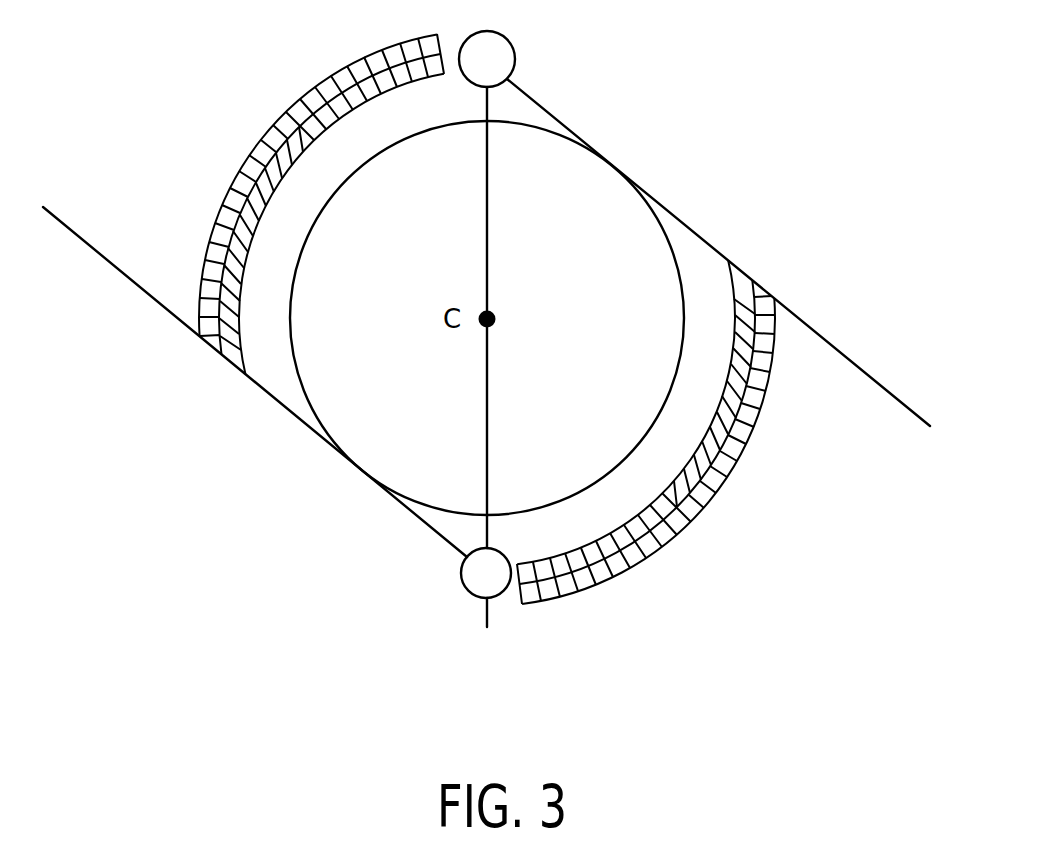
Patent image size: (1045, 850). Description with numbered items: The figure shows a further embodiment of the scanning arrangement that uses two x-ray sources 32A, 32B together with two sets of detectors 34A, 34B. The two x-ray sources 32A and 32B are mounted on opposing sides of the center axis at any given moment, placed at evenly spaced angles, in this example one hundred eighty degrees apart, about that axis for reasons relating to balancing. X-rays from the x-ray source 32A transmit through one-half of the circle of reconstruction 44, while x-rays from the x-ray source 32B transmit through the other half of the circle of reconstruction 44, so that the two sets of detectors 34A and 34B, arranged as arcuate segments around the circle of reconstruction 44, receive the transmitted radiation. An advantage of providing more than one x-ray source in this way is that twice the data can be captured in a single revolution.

The circle of reconstruction 44 is at (294, 278).
The x-ray source 32A is at (515, 52).
The x-ray source 32B is at (466, 587).
The set of detectors 34A is at (708, 496).
The set of detectors 34B is at (296, 112).